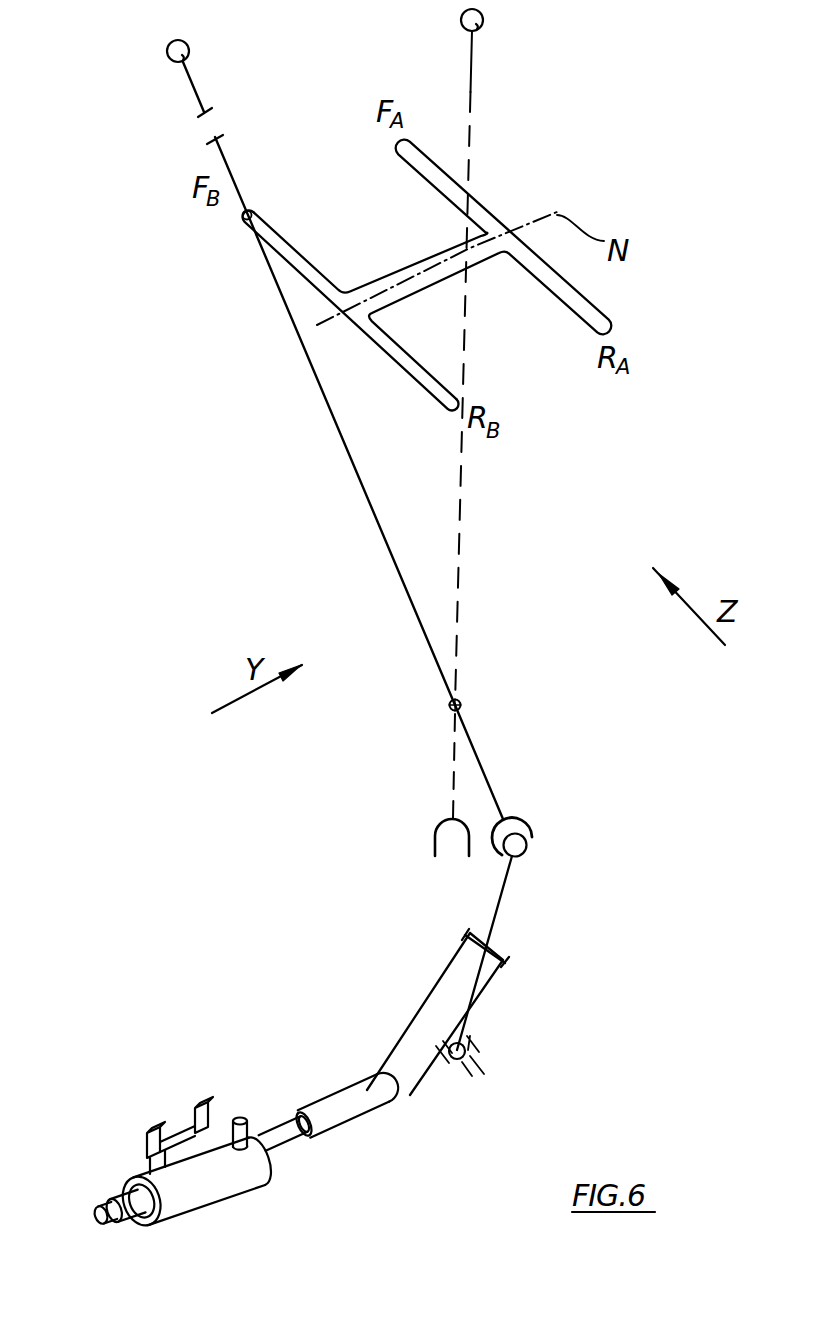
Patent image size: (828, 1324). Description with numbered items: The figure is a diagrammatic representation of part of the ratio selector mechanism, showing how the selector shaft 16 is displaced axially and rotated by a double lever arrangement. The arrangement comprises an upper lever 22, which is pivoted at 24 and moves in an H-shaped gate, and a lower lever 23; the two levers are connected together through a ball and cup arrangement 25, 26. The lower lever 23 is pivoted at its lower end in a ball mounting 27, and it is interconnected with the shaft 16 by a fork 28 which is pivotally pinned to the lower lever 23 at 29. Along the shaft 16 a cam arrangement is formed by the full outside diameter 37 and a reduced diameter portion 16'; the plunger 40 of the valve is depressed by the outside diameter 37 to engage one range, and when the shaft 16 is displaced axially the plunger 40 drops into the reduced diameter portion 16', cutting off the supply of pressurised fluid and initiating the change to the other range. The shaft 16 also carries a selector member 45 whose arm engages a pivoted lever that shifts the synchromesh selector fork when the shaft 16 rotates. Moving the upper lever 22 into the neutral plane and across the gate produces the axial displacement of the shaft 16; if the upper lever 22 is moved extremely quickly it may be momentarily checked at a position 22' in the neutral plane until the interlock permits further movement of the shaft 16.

The upper lever 22 is at (343, 440).
The checking position of lever 22' is at (426, 275).
The pivot 24 is at (462, 701).
The cup 26 is at (524, 818).
The ball 25 is at (527, 850).
The lower lever 23 is at (502, 897).
The fork 28 is at (426, 997).
The pin 29 is at (504, 965).
The ball mounting 27 is at (466, 1070).
The selector shaft 16 is at (370, 1117).
The reduced diameter portion 16' is at (321, 1163).
The outside diameter 37 is at (216, 1170).
The plunger 40 is at (246, 1121).
The selector member 45 is at (140, 1136).